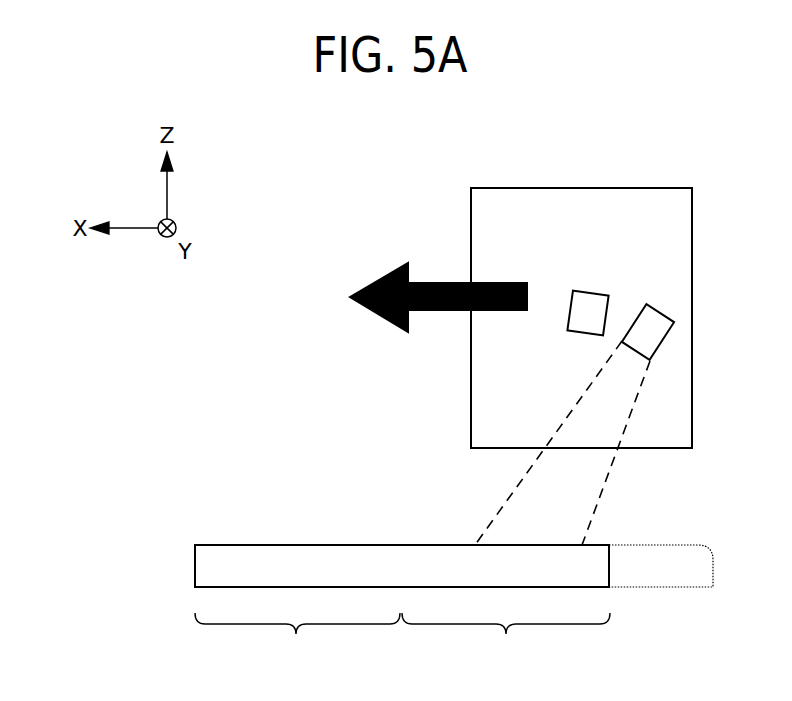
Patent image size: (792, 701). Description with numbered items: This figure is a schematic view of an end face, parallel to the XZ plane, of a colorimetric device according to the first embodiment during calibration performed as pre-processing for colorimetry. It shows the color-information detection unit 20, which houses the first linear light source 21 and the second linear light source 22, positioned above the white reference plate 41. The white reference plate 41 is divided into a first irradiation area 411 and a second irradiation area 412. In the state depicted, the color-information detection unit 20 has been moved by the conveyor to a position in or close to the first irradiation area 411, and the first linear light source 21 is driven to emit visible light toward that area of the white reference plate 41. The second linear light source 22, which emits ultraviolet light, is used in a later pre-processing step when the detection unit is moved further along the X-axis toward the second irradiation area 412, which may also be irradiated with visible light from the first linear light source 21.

The color-information detection unit 20 is at (608, 188).
The first linear light source 21 is at (663, 315).
The second linear light source 22 is at (592, 292).
The white reference plate 41 is at (250, 545).
The first irradiation area 411 is at (506, 640).
The second irradiation area 412 is at (297, 640).